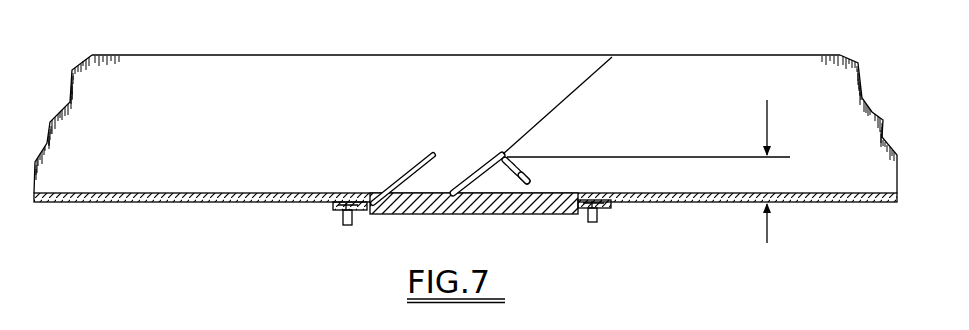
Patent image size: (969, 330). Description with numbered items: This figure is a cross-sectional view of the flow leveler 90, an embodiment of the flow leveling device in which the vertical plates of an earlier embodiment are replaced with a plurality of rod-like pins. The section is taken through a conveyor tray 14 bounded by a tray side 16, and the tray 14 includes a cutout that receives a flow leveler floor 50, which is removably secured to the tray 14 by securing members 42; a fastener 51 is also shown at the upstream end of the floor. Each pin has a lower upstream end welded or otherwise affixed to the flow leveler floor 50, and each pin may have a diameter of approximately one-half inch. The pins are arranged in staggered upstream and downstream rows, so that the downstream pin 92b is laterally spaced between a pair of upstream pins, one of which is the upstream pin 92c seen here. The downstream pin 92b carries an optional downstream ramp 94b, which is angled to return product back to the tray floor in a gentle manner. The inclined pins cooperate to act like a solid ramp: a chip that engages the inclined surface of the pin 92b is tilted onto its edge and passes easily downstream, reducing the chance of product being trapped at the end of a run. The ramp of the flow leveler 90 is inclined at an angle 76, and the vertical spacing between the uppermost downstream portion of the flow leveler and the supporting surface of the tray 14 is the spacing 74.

The tray side 16 is at (121, 163).
The tray 14 is at (245, 203).
The flow leveler floor 50 is at (403, 209).
The clamp fastener 51 is at (368, 192).
The securing member 42 is at (597, 222).
The pin 92c is at (407, 173).
The pin 92b is at (473, 176).
The downstream ramp 94b is at (516, 181).
The angle 76 is at (589, 86).
The spacing 74 is at (764, 171).
The flow leveler 90 is at (363, 120).